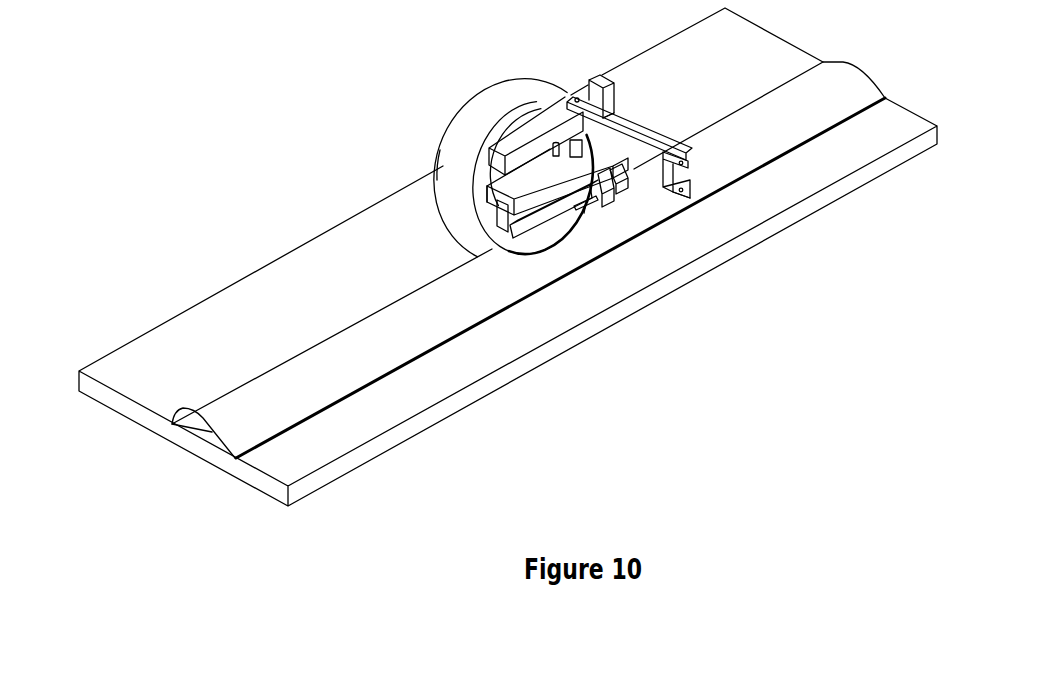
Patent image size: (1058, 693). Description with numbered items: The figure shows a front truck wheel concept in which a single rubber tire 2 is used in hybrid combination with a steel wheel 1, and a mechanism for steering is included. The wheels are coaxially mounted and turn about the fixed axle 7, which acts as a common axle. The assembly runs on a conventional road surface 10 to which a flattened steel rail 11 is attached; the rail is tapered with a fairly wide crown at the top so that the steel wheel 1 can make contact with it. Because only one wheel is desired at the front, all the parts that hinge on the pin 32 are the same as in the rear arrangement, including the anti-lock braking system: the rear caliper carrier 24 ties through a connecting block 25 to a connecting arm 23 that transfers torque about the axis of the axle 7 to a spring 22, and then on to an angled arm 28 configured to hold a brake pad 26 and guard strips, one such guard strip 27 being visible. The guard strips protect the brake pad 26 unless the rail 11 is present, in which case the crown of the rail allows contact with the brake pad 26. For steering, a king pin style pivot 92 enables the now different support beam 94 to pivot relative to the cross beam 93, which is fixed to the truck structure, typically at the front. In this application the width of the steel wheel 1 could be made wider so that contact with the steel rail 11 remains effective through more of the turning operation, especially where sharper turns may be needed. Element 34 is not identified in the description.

The steel wheel 1 is at (488, 237).
The inner tire 2 is at (445, 150).
The fixed axle 7 is at (598, 200).
The road surface 10 is at (392, 402).
The flattened steel rail 11 is at (183, 409).
The spring 22 is at (615, 195).
The connecting arm 23 is at (585, 212).
The rear caliper carrier 24 is at (527, 235).
The connecting block 25 is at (532, 233).
The brake pad 26 is at (622, 198).
The guard strip 27 is at (620, 200).
The angled arm 28 is at (684, 179).
The pin 32 is at (598, 132).
The locating pin 34 is at (608, 205).
The king pin style pivot 92 is at (573, 98).
The cross beam 93 is at (657, 137).
The support beam 94 is at (613, 74).